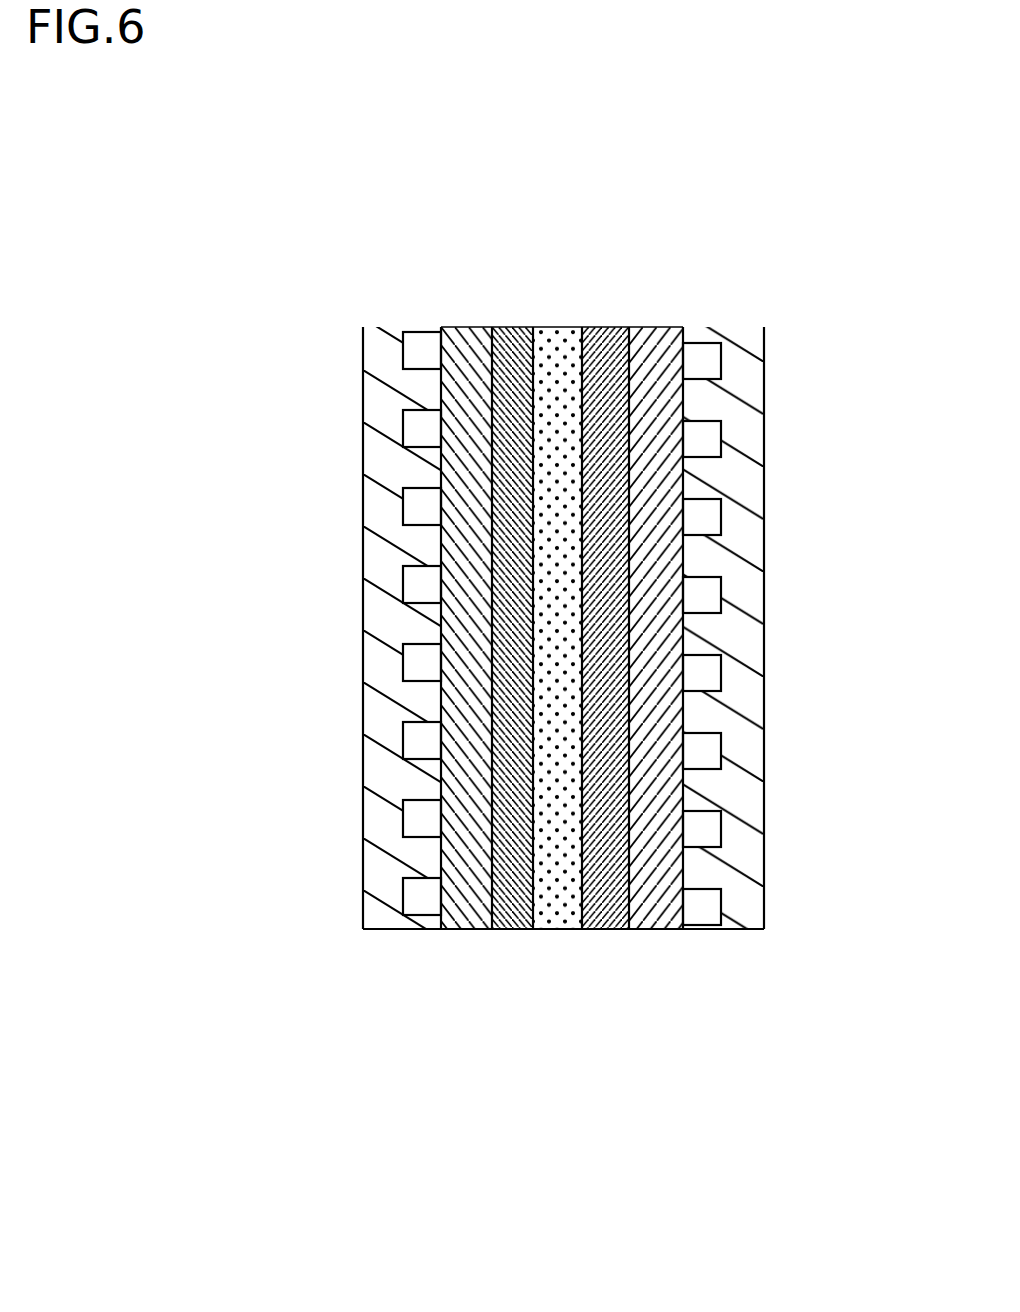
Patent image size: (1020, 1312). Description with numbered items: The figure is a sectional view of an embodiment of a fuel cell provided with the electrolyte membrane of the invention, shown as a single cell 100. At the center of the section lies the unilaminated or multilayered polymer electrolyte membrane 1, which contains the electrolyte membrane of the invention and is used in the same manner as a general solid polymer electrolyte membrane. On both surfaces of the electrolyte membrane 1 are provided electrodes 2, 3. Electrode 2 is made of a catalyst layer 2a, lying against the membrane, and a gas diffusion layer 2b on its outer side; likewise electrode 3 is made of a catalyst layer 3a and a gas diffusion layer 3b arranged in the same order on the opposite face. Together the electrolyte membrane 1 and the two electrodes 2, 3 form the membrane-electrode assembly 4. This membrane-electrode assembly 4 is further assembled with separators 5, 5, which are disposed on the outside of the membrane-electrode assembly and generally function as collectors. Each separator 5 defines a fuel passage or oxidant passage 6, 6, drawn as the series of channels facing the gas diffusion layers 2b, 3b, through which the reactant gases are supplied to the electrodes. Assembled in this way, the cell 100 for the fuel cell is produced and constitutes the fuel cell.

The single cell 100 is at (548, 246).
The polymer electrolyte membrane 1 is at (561, 930).
The electrode 2 is at (675, 1060).
The catalyst layer 2a is at (608, 930).
The gas diffusion layer 2b is at (662, 930).
The electrode 3 is at (538, 1060).
The catalyst layer 3a is at (518, 930).
The gas diffusion layer 3b is at (469, 930).
The membrane-electrode assembly 4 is at (652, 1125).
The separator 5 is at (415, 857).
The gas passage 6 is at (415, 665).